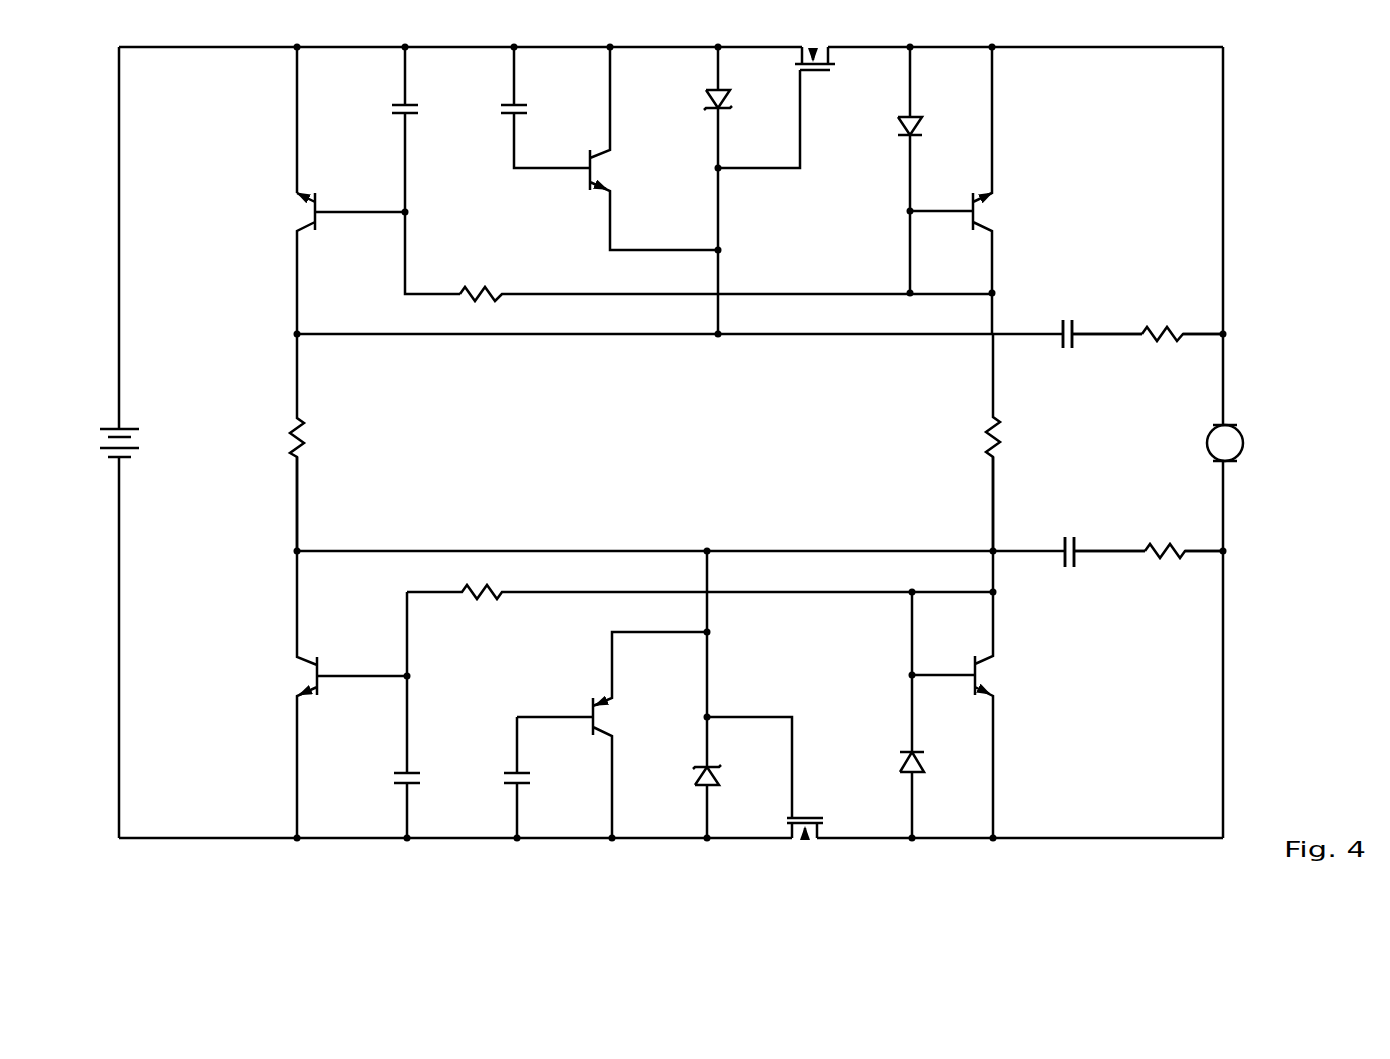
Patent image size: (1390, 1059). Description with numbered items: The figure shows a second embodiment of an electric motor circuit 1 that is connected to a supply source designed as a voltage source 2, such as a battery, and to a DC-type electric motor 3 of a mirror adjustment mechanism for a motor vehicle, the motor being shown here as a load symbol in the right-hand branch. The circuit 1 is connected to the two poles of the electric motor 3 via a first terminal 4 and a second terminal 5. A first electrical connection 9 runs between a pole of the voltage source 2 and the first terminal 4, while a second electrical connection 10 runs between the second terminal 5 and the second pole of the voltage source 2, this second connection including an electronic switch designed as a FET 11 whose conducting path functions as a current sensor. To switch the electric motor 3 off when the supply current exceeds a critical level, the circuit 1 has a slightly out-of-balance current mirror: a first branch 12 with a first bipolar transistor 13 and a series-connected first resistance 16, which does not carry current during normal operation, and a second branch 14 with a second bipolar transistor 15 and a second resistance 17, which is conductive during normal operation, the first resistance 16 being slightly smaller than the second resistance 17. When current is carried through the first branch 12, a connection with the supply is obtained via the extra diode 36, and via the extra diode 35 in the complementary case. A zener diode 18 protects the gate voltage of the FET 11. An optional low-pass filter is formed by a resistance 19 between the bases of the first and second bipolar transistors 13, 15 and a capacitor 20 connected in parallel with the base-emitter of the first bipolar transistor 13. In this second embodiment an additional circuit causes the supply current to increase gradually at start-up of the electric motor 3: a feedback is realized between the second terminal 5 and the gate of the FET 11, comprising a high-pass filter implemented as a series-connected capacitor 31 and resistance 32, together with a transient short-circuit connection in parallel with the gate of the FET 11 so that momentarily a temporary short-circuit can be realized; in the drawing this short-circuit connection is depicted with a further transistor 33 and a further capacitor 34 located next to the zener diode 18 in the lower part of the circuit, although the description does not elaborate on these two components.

The electric motor circuit 1 is at (1302, 271).
The voltage source 2 is at (106, 419).
The electric motor 3 is at (1250, 430).
The first terminal 4 is at (1226, 332).
The second terminal 5 is at (1230, 557).
The first electrical connection 9 is at (1223, 152).
The second electrical connection 10 is at (1223, 672).
The FET 11 is at (831, 812).
The first branch 12 is at (297, 502).
The first bipolar transistor 13 is at (288, 668).
The second branch 14 is at (993, 488).
The second bipolar transistor 15 is at (1006, 693).
The first resistance 16 is at (285, 418).
The second resistance 17 is at (1010, 413).
The zener diode 18 is at (689, 794).
The resistance 19 is at (503, 611).
The capacitor 20 is at (425, 765).
The capacitor 31 is at (1066, 576).
The resistance 32 is at (1160, 576).
The transistor 33 is at (620, 707).
The capacitor 34 is at (535, 794).
The extra diode 35 is at (889, 751).
The extra diode 36 is at (890, 143).